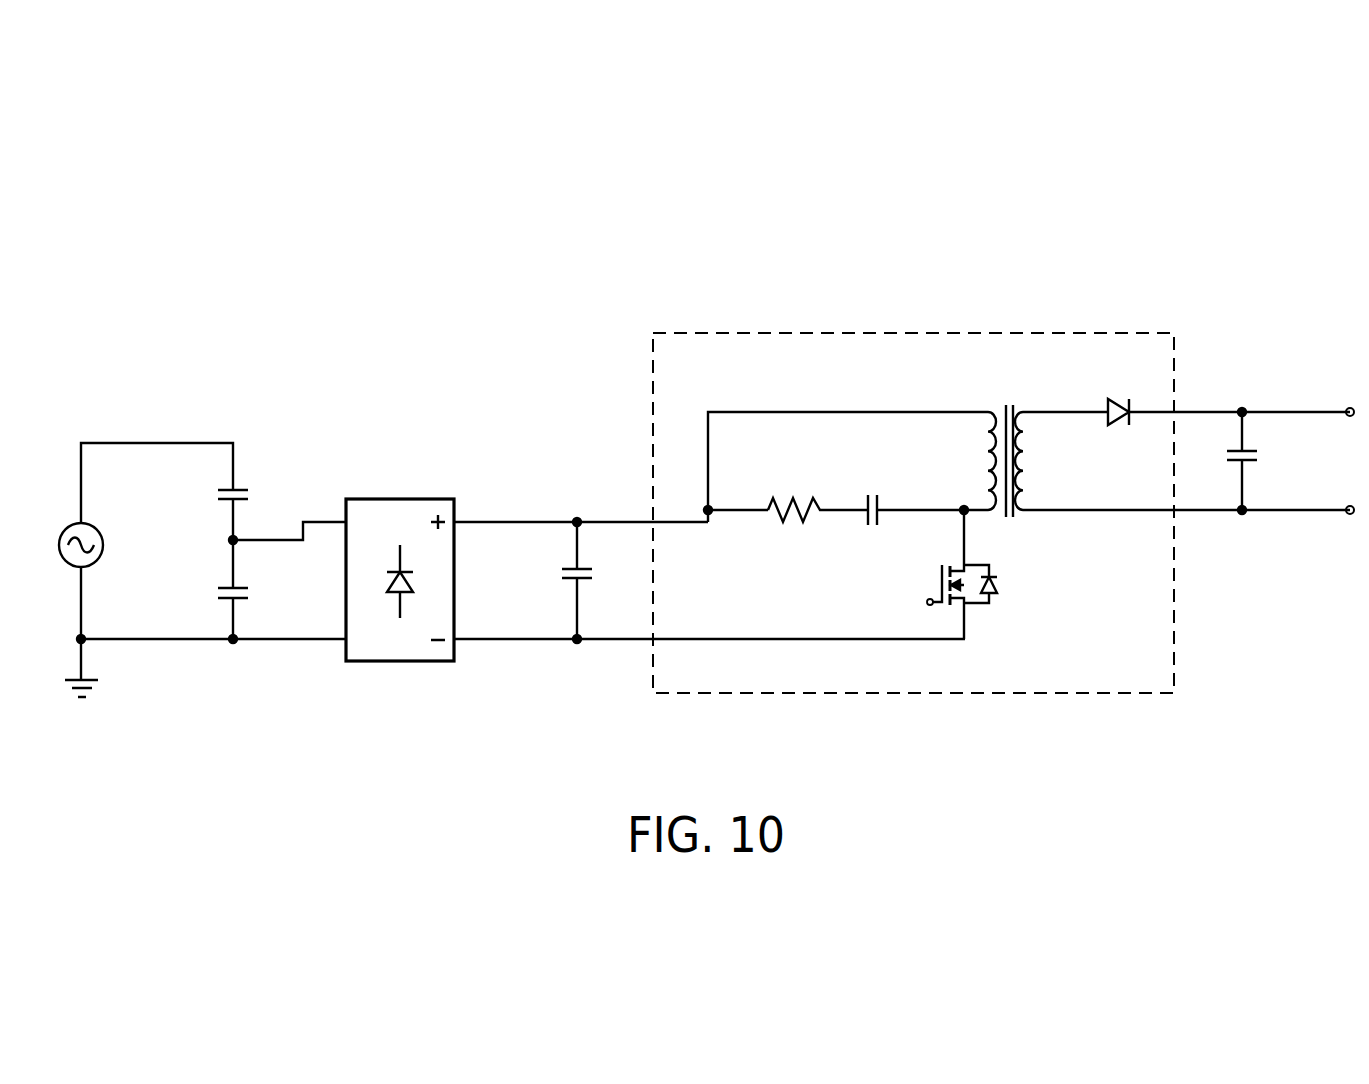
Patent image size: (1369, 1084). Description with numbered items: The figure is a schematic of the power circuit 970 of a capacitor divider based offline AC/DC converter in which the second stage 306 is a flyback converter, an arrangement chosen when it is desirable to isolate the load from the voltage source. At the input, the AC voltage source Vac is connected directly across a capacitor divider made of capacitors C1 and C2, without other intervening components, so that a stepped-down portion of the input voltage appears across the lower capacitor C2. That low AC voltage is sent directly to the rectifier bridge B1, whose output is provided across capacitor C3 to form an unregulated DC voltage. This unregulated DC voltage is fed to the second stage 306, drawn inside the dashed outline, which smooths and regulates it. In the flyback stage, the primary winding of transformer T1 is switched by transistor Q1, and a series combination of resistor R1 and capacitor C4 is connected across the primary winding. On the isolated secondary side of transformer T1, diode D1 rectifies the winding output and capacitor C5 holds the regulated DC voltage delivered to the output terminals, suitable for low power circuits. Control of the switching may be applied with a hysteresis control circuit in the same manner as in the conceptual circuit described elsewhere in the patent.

The circuit 970 is at (833, 253).
The second stage 306 is at (1083, 332).
The AC voltage source Vac is at (103, 545).
The capacitor C1 is at (247, 511).
The capacitor C2 is at (247, 589).
The bridge rectifier B1 is at (400, 563).
The capacitor C3 is at (591, 580).
The resistor R1 is at (796, 491).
The capacitor C4 is at (872, 492).
The transformer T1 is at (1005, 440).
The diode D1 is at (1118, 394).
The capacitor C5 is at (1256, 461).
The transistor Q1 is at (980, 574).